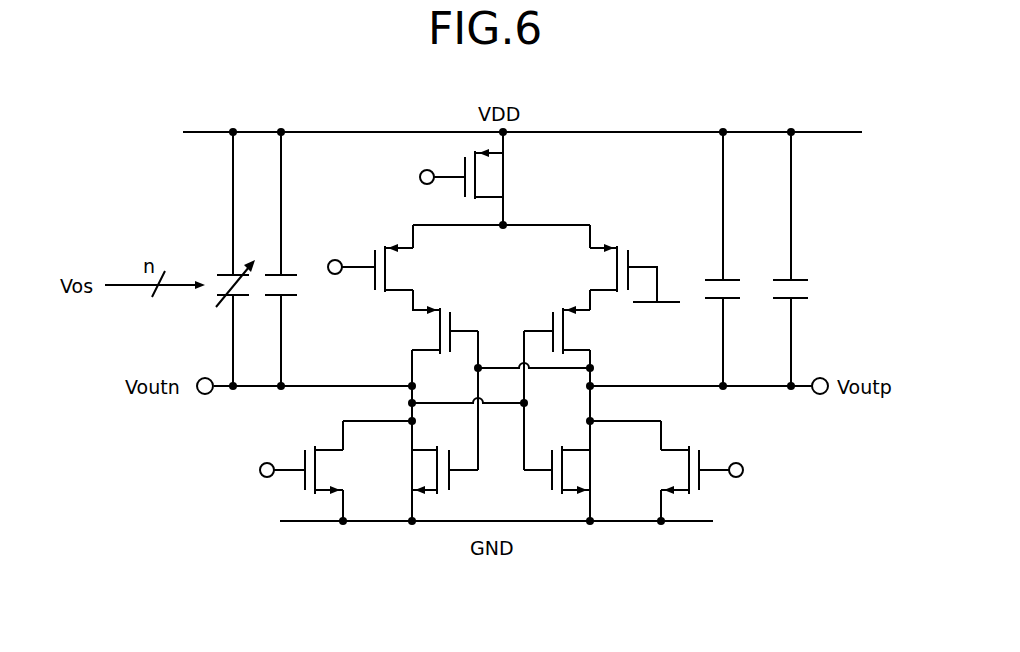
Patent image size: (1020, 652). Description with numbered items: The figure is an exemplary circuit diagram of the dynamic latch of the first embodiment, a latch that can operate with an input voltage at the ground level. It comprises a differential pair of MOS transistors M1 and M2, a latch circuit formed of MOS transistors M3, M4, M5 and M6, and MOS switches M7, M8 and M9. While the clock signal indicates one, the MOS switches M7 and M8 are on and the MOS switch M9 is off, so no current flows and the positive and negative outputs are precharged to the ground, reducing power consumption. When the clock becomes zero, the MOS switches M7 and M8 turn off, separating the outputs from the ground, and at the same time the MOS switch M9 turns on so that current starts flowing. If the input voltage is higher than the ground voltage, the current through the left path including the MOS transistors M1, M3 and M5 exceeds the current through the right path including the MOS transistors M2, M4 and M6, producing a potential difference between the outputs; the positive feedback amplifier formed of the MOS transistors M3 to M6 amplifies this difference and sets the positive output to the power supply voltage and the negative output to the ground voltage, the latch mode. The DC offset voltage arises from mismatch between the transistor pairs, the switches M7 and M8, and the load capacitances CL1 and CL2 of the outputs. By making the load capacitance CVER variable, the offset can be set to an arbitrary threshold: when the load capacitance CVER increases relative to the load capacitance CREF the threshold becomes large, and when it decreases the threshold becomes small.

The MOS transistor M1 is at (372, 261).
The MOS transistor M2 is at (626, 289).
The MOS transistor M3 is at (436, 470).
The MOS transistor M4 is at (562, 470).
The MOS transistor M5 is at (437, 330).
The MOS transistor M6 is at (562, 330).
The MOS switch M7 is at (283, 470).
The MOS switch M8 is at (719, 470).
The MOS switch M9 is at (438, 174).
The load capacitance CVER is at (193, 259).
The load capacitance CL1 is at (297, 259).
The load capacitance CL2 is at (737, 259).
The load capacitance CREF is at (815, 259).